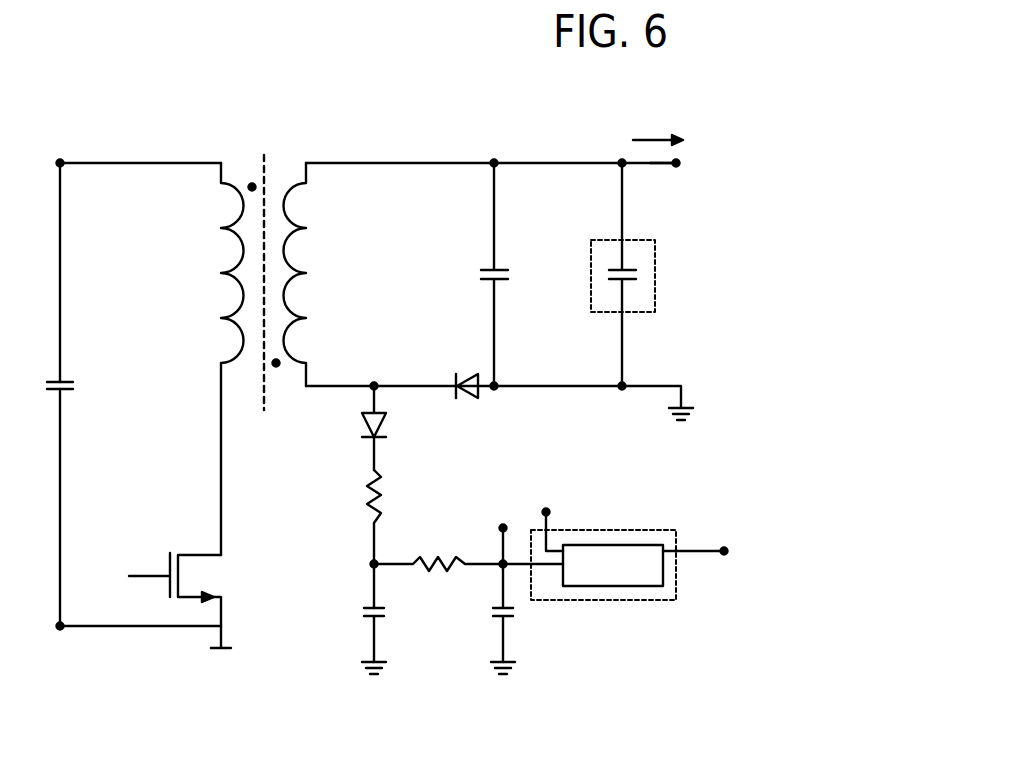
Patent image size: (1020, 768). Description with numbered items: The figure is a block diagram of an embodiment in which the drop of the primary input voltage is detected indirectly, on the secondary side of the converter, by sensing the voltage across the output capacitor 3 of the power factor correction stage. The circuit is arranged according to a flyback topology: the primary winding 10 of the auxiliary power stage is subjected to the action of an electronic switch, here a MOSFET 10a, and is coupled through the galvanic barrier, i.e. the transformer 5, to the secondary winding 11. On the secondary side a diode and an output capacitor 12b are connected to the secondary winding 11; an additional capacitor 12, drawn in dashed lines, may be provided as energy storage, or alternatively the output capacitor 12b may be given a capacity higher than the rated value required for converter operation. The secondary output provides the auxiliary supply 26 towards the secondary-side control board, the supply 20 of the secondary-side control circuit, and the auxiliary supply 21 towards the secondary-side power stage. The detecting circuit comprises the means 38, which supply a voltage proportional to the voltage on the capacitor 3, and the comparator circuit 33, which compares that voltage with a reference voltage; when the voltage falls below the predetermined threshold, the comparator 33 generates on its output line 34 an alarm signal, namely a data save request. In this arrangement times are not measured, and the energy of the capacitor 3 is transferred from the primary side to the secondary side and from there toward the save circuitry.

The output capacitor of PFC circuit 3 is at (66, 392).
The galvanic barrier (transformer) 5 is at (278, 158).
The primary winding 10 is at (196, 162).
The MOSFET 10a is at (182, 587).
The secondary winding 11 is at (347, 163).
The additional capacitor 12 is at (631, 270).
The output capacitor 12b is at (489, 268).
The supply of control circuit (secondary side) 20 is at (691, 145).
The auxiliary supply towards power stage (secondary side) 21 is at (703, 166).
The auxiliary supply from stage 11 towards control board (secondary side) 26 is at (683, 124).
The comparator circuit 33 is at (600, 555).
The output line of comparator 34 is at (710, 558).
The means supplying voltage proportional to capacitor voltage 38 is at (442, 663).